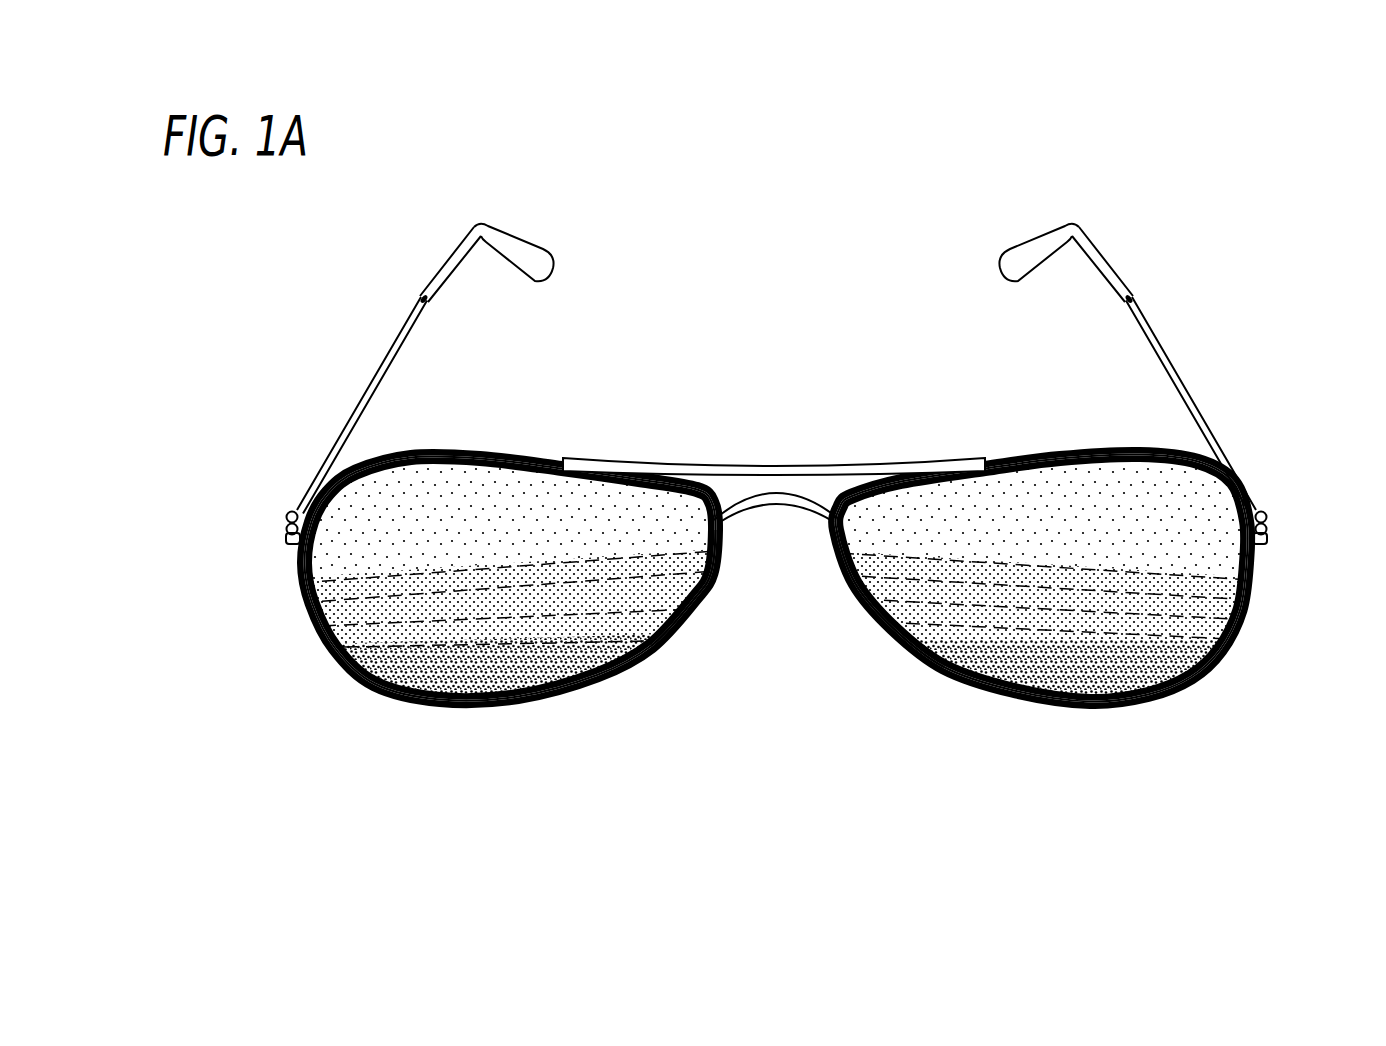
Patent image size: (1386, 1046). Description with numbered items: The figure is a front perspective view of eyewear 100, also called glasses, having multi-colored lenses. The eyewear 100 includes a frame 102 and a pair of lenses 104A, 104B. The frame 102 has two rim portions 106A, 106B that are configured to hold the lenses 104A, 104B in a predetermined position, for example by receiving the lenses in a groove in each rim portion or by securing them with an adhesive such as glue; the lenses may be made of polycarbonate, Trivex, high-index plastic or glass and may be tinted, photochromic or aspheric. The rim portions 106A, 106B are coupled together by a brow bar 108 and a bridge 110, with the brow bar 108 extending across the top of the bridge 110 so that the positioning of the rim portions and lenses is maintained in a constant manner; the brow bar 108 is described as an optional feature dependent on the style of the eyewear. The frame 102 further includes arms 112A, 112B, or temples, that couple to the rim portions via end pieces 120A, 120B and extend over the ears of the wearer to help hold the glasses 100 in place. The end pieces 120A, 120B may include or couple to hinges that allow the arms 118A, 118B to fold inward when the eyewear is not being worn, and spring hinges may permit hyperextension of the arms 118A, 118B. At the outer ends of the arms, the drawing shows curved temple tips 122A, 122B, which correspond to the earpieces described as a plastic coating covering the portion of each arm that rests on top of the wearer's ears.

The eyewear 100 is at (734, 476).
The frame 102 is at (757, 559).
The lens 104A is at (338, 562).
The lens 104B is at (1005, 658).
The rim portion 106A is at (525, 635).
The rim portion 106B is at (1020, 611).
The brow bar 108 is at (823, 457).
The bridge 110 is at (774, 514).
The arm 112A is at (695, 604).
The arm 112B is at (847, 598).
The arm 118A is at (462, 341).
The arm 118B is at (1134, 326).
The end piece 120A is at (284, 519).
The end piece 120B is at (1264, 521).
The left temple tip 122A is at (548, 250).
The right temple tip 122B is at (1033, 237).